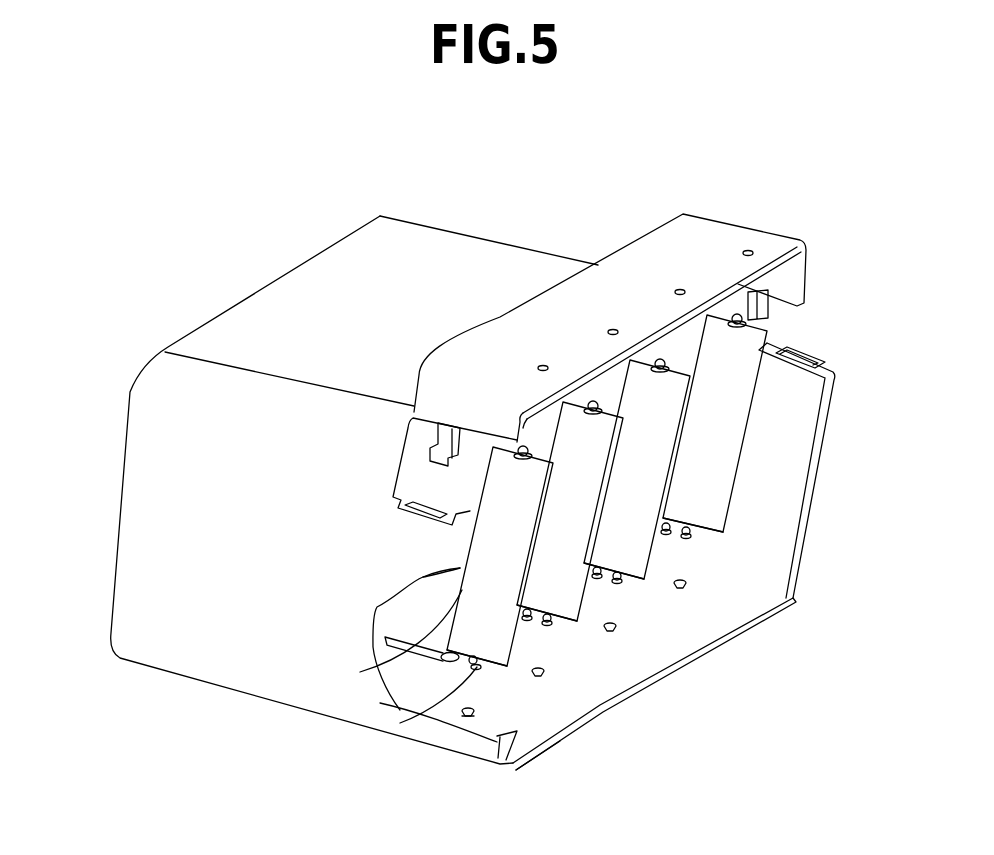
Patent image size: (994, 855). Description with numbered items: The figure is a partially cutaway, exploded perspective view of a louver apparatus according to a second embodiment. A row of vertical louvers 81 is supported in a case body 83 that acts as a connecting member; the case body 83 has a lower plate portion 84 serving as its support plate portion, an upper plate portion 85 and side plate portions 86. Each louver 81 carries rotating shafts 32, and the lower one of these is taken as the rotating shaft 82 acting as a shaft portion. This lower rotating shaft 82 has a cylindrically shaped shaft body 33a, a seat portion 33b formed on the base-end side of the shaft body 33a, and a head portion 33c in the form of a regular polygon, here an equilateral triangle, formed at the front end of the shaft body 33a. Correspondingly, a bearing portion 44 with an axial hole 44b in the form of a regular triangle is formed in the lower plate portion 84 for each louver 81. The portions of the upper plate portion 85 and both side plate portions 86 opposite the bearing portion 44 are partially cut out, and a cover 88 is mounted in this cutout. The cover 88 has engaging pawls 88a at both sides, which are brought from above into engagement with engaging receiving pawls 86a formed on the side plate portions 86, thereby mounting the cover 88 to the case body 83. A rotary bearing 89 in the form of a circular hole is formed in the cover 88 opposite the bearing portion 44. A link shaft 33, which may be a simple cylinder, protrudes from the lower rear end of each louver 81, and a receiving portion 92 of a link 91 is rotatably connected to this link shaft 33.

The rotating shaft 32 is at (523, 458).
The link shaft 33 is at (443, 660).
The shaft body 33a is at (430, 728).
The seat portion 33b is at (470, 657).
The head portion 33c is at (478, 675).
The bearing portion 44 is at (682, 590).
The axial hole 44b is at (472, 722).
The louver 81 is at (650, 488).
The lower rotating shaft 82 is at (690, 538).
The case body 83 is at (528, 650).
The lower plate portion 84 is at (740, 612).
The upper plate portion 85 is at (497, 256).
The side plate portion 86 is at (143, 470).
The engaging receiving pawl 86a is at (400, 521).
The cover 88 is at (640, 253).
The engaging pawl 88a is at (430, 441).
The rotary bearing 89 is at (610, 330).
The link 91 is at (407, 623).
The receiving portion 92 is at (441, 657).